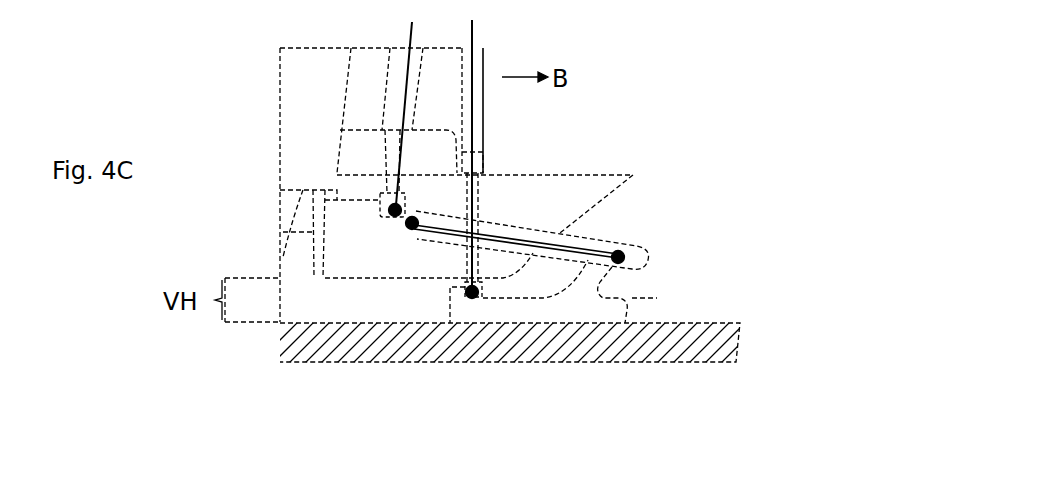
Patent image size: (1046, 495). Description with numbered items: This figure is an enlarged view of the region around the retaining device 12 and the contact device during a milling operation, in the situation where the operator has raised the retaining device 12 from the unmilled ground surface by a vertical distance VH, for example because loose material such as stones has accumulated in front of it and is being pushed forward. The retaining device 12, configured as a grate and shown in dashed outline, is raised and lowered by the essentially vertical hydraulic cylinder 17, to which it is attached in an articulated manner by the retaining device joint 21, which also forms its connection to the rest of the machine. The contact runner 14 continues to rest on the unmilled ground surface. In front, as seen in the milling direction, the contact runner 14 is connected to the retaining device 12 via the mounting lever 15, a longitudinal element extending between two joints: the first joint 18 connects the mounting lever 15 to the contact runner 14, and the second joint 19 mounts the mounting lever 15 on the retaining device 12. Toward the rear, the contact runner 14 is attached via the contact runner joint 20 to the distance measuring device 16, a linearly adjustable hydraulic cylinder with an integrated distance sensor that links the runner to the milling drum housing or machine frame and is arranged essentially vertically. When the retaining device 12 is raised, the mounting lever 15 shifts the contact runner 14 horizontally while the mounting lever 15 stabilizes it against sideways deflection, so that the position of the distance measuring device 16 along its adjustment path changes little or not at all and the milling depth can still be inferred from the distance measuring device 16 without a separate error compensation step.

The retaining device 12 is at (353, 250).
The contact runner 14 is at (597, 310).
The mounting lever 15 is at (532, 233).
The distance measuring device 16 is at (470, 77).
The hydraulic cylinder 17 is at (398, 72).
The first joint 18 is at (621, 250).
The second joint 19 is at (412, 228).
The contact runner joint 20 is at (474, 296).
The retaining device joint 21 is at (388, 207).